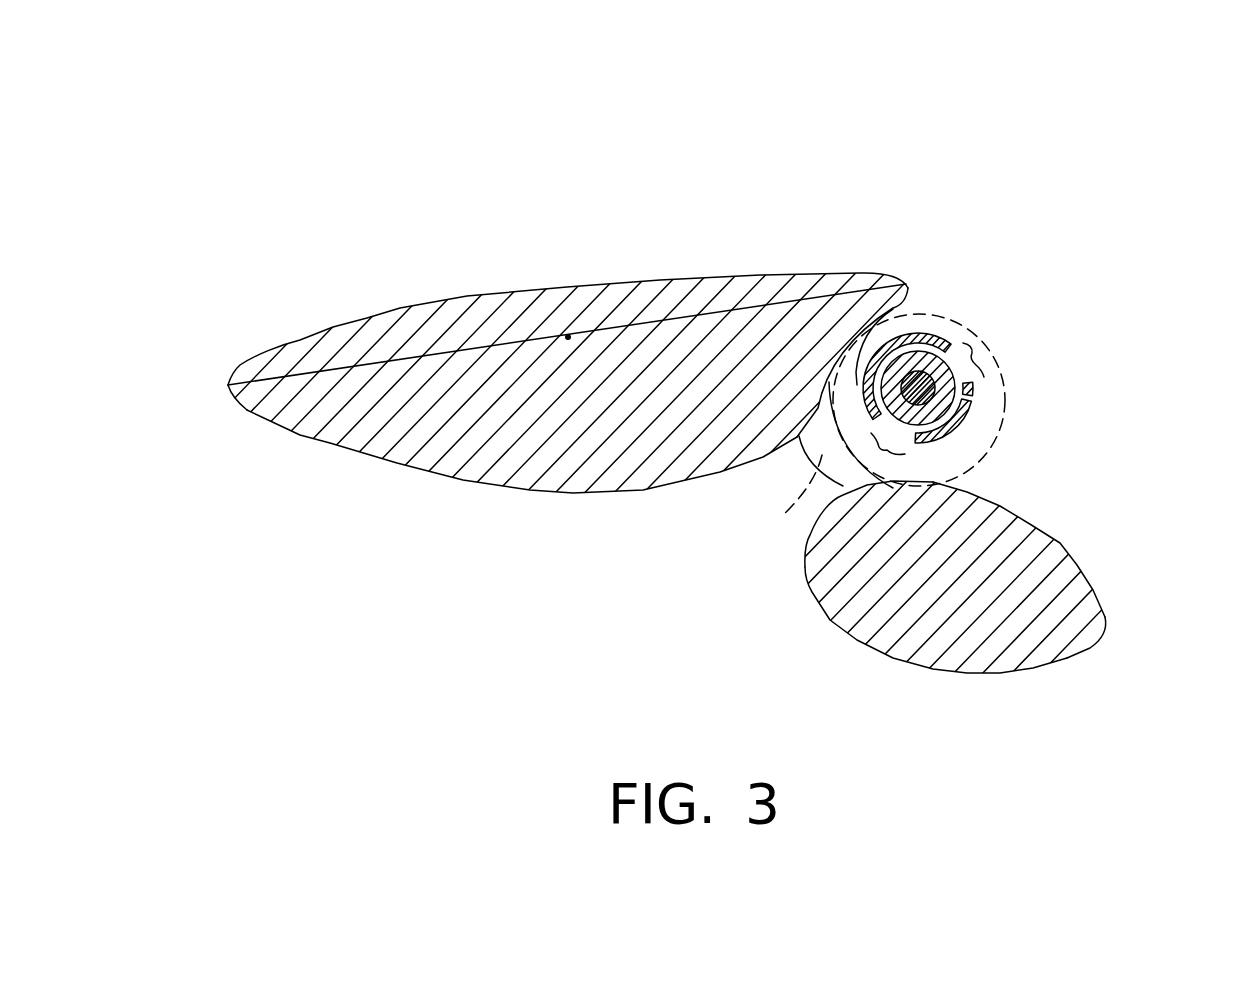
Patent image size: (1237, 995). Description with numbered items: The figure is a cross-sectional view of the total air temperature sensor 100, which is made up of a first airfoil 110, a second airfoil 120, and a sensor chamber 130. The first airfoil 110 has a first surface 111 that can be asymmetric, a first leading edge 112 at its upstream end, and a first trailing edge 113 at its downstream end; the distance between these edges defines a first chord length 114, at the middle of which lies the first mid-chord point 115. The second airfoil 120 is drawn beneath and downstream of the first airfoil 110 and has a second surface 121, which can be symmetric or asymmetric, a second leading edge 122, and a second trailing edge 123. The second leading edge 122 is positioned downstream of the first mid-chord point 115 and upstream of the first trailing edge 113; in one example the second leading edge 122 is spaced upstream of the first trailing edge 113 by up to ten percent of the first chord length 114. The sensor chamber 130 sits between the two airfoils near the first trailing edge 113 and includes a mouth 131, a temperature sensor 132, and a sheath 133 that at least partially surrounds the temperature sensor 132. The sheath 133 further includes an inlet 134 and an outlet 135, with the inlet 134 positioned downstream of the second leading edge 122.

The total air temperature sensor 100 is at (172, 102).
The first airfoil 110 is at (562, 339).
The first surface 111 is at (398, 313).
The first leading edge 112 is at (228, 385).
The first trailing edge 113 is at (902, 294).
The first chord length 114 is at (273, 393).
The first mid-chord point 115 is at (568, 337).
The second airfoil 120 is at (932, 577).
The second surface 121 is at (1073, 567).
The second leading edge 122 is at (808, 548).
The second trailing edge 123 is at (1107, 635).
The sensor chamber 130 is at (903, 378).
The mouth 131 is at (782, 517).
The temperature sensor 132 is at (937, 403).
The sheath 133 is at (962, 430).
The inlet 134 is at (897, 453).
The outlet 135 is at (978, 352).